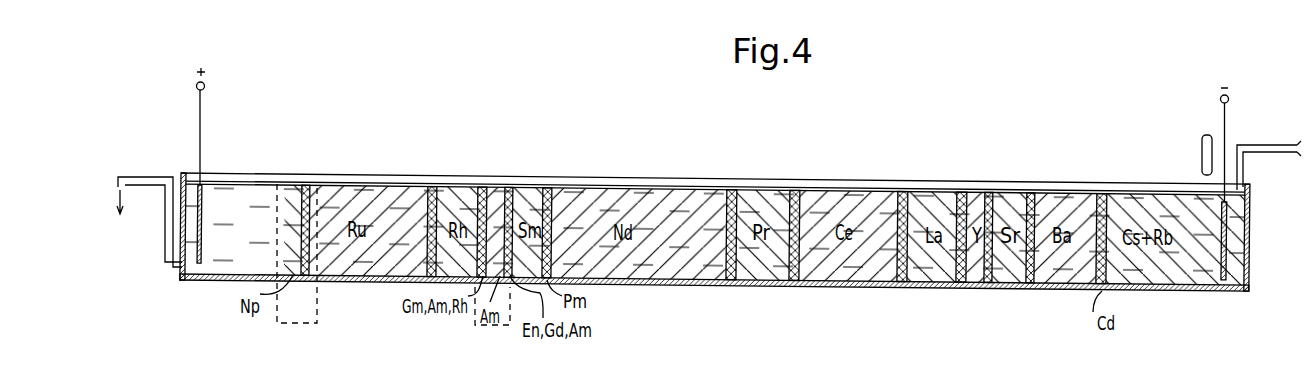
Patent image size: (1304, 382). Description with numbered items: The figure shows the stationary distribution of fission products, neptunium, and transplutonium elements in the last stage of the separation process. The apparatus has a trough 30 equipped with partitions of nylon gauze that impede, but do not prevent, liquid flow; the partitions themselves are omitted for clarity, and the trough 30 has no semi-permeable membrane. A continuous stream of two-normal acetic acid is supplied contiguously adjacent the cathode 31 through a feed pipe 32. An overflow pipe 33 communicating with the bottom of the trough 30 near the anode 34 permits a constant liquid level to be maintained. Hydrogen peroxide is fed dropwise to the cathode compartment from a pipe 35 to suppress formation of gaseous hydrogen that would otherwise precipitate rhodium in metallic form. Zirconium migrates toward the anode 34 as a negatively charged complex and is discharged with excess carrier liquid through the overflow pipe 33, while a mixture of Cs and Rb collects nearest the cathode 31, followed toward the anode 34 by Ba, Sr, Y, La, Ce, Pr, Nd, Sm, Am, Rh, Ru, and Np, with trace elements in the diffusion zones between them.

The trough 30 is at (790, 283).
The cathode 31 is at (1232, 291).
The feed pipe 32 is at (1265, 158).
The overflow pipe 33 is at (165, 245).
The anode 34 is at (202, 118).
The pipe 35 is at (1200, 146).